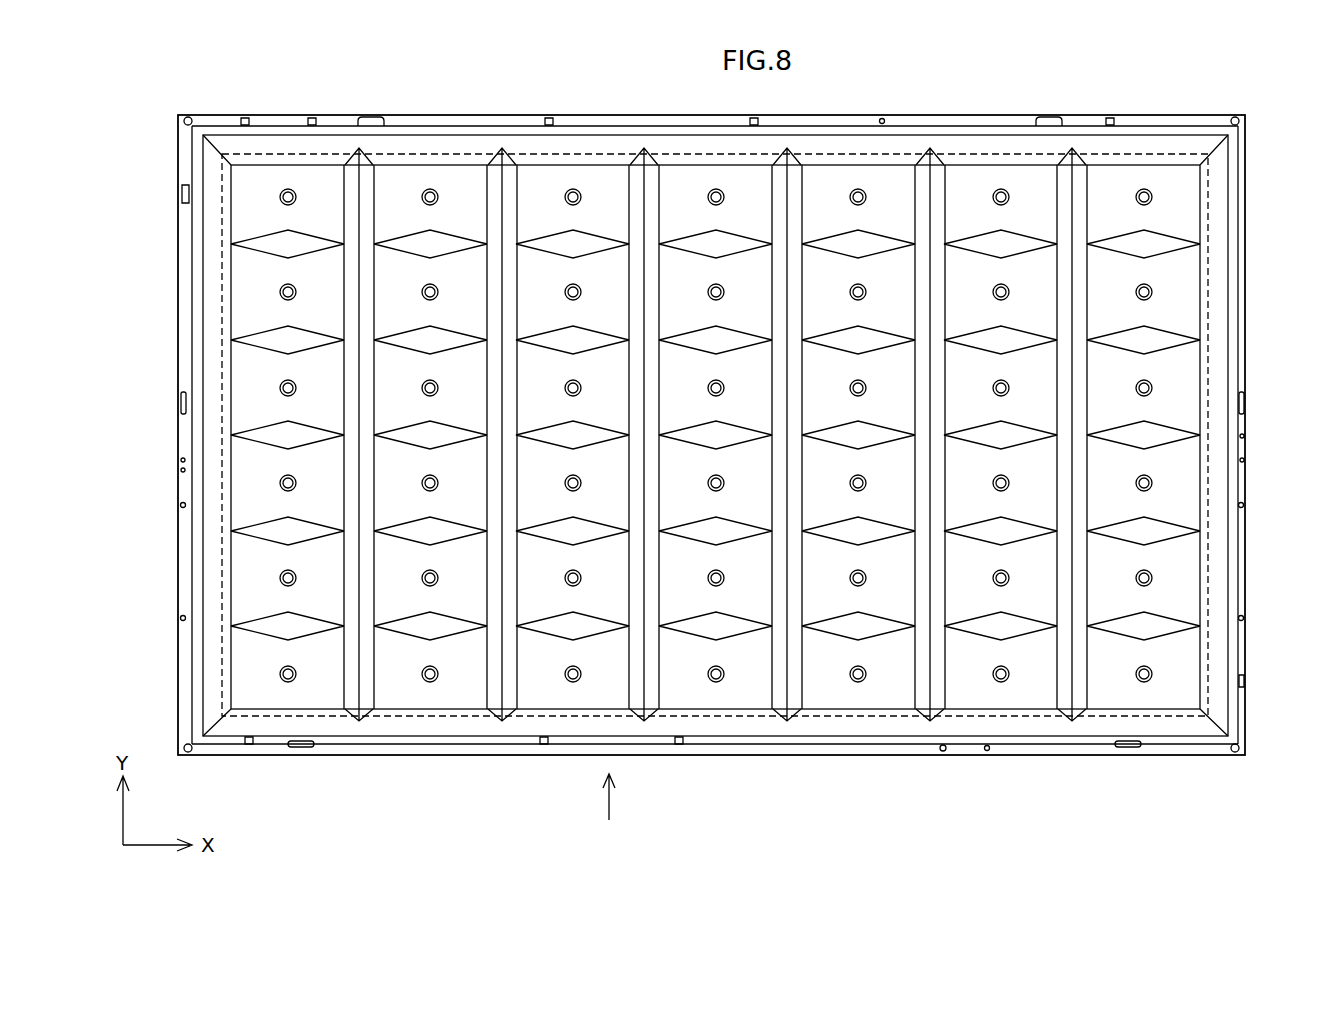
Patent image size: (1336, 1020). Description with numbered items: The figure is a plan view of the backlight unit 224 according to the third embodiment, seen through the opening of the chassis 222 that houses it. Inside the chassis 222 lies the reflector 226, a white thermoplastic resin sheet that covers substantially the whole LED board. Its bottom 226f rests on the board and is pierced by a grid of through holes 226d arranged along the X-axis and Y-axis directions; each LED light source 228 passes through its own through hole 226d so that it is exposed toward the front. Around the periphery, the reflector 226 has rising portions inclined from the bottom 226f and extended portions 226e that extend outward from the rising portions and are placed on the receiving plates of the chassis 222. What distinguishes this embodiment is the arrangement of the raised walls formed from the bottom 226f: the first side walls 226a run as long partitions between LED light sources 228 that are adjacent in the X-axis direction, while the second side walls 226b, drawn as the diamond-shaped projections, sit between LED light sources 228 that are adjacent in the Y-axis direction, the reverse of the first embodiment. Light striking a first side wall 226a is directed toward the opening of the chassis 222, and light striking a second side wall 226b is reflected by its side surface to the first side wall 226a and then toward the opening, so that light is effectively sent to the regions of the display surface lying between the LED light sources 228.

The chassis 222 is at (1248, 690).
The backlight unit 224 is at (612, 814).
The reflector 226 is at (1240, 600).
The first side wall 226a is at (492, 700).
The second side wall 226b is at (270, 625).
The through hole 226d is at (568, 191).
The extended portion 226e is at (1233, 540).
The bottom 226f is at (543, 688).
The LED light source 228 is at (1001, 684).